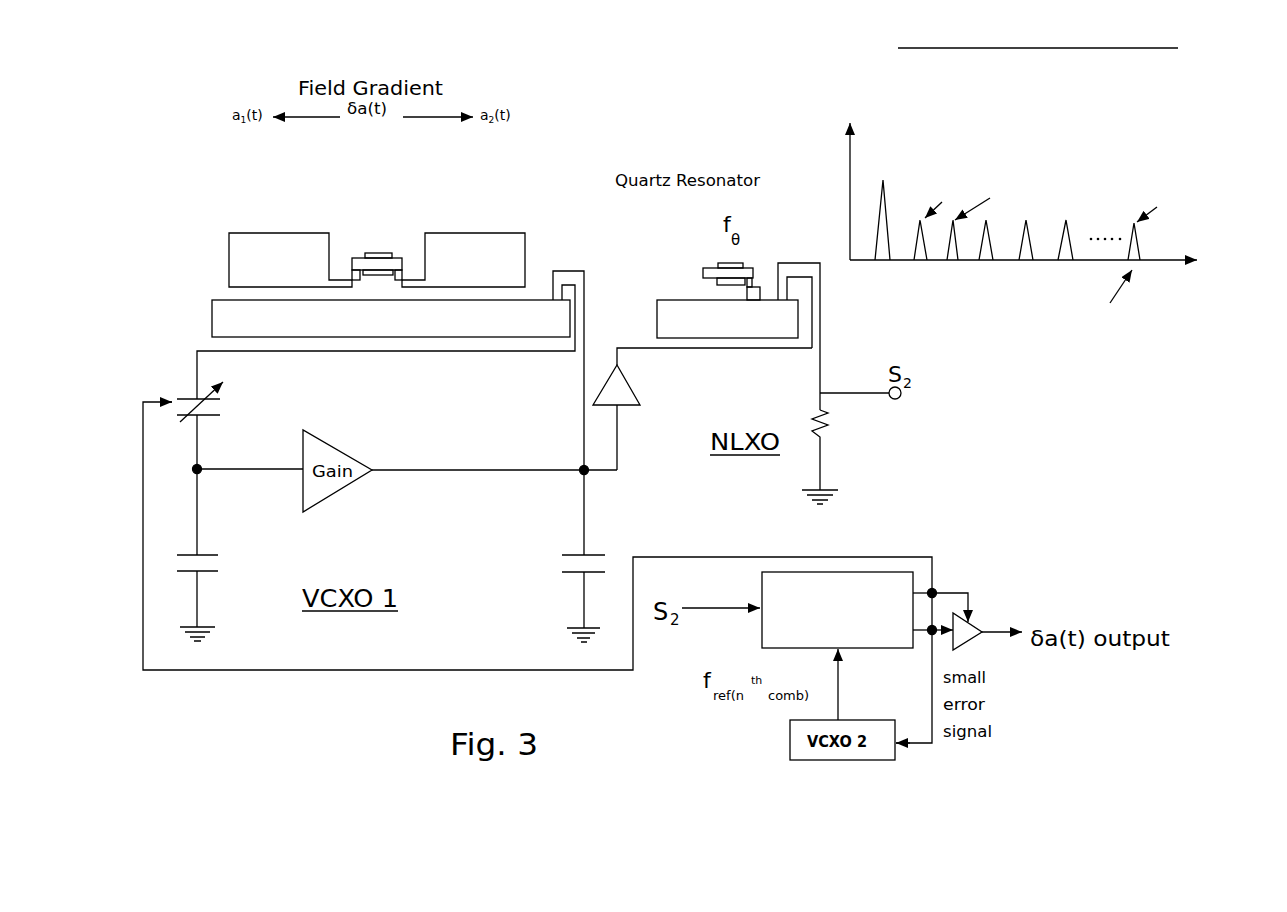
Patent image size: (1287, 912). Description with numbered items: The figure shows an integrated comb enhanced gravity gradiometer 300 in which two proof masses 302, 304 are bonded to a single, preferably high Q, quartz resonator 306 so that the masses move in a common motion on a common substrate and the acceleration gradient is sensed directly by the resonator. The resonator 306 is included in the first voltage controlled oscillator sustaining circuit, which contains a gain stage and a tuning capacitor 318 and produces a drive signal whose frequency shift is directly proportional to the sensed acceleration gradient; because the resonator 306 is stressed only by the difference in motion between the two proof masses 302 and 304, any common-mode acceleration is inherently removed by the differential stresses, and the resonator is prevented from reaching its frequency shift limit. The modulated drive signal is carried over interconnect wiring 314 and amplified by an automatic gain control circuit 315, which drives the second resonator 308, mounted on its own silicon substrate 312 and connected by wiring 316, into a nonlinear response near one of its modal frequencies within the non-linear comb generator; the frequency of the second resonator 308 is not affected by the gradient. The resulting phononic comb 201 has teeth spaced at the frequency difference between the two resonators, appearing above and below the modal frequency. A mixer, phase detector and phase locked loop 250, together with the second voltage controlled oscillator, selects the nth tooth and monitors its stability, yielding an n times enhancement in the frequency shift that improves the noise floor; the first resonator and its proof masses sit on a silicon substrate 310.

The phononic comb 201 is at (892, 124).
The phase locked loop 250 is at (773, 632).
The comb enhanced gravity gradiometer 300 is at (260, 187).
The proof mass 302 is at (240, 243).
The proof mass 304 is at (500, 235).
The quartz resonator 306 is at (393, 252).
The second resonator 308 is at (690, 268).
The Si substrate 310 is at (220, 308).
The Si substrate 312 is at (677, 325).
The electrical interconnect wires to VCXO 1 314 is at (589, 346).
The automatic gain control circuit 315 is at (702, 409).
The electrical interconnect wires to NLXO 316 is at (814, 318).
The tuning capacitor 318 is at (207, 405).